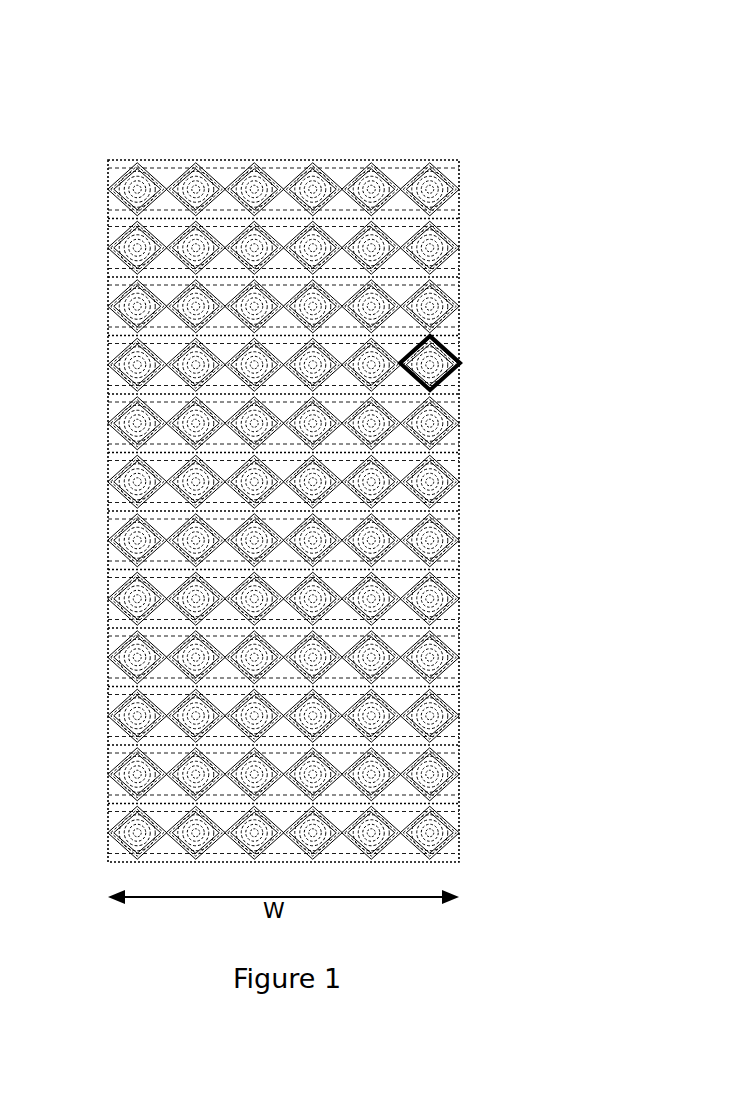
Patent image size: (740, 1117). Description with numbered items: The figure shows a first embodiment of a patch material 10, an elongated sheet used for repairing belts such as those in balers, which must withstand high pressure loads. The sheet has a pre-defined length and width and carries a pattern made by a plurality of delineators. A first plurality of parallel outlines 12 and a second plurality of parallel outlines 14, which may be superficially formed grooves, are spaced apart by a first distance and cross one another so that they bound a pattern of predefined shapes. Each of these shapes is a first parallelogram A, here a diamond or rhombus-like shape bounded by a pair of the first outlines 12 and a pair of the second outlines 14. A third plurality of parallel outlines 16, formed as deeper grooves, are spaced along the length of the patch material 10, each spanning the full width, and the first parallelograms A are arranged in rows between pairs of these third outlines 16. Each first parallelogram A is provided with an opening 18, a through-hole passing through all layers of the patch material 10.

The patch material 10 is at (207, 120).
The first plurality of parallel delineators 12 is at (388, 178).
The second plurality of parallel delineators 14 is at (355, 178).
The third plurality of parallel delineators 16 is at (453, 218).
The opening 18 is at (430, 305).
The first parallelogram A is at (461, 363).